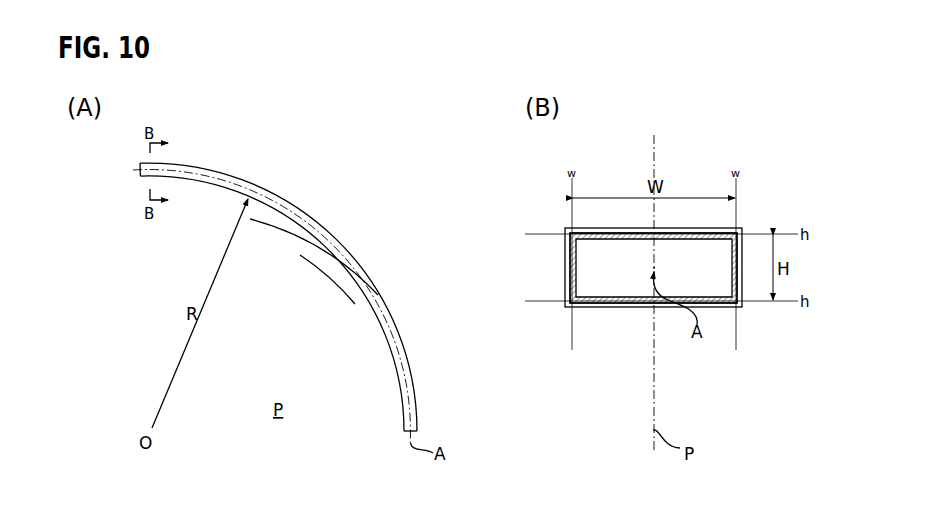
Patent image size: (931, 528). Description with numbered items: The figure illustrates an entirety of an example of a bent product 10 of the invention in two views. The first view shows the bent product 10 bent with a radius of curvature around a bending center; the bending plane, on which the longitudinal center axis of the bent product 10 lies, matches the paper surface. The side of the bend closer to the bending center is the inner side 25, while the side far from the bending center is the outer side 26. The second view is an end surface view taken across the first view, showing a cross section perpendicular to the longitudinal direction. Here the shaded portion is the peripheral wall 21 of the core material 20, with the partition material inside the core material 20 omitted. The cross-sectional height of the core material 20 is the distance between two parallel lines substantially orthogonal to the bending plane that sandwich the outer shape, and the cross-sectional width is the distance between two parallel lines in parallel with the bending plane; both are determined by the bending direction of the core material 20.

The bent product 10 is at (285, 200).
The core material 20 is at (598, 307).
The peripheral wall 21 is at (627, 303).
The inner side 25 is at (330, 264).
The outer side 26 is at (350, 243).